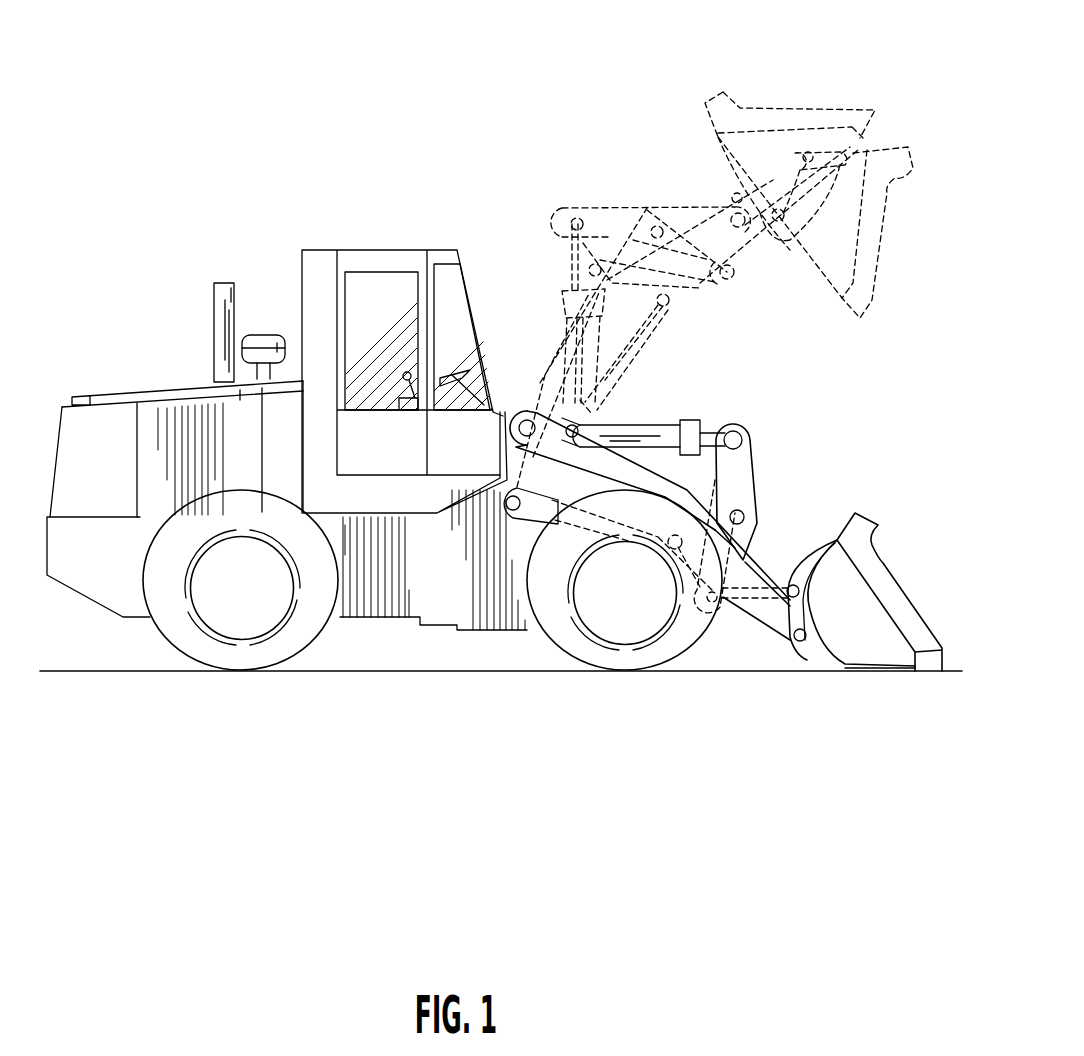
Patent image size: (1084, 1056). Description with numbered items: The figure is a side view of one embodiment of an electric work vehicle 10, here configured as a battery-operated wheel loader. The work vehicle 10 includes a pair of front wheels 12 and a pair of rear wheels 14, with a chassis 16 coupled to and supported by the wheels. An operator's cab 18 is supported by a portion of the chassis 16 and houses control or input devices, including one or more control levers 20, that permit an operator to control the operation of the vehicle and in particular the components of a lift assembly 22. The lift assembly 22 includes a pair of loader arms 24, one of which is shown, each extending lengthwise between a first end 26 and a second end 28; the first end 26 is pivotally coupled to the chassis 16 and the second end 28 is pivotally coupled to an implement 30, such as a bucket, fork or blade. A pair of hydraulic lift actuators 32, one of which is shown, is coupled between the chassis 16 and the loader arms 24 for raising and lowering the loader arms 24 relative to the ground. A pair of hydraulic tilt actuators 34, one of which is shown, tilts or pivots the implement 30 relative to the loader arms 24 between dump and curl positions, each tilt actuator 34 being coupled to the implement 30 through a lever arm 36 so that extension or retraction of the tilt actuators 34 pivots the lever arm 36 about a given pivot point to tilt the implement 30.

The electric work vehicle 10 is at (506, 212).
The front wheels 12 is at (660, 655).
The rear wheels 14 is at (243, 660).
The chassis 16 is at (352, 597).
The operator's cab 18 is at (456, 304).
The control lever 20 is at (403, 372).
The lift assembly 22 is at (776, 390).
The loader arm 24 is at (740, 565).
The first end 26 is at (532, 416).
The second end 28 is at (777, 623).
The implement 30 is at (910, 582).
The hydraulic lift actuator 32 is at (524, 535).
The hydraulic tilt actuator 34 is at (645, 406).
The lever arm 36 is at (768, 468).